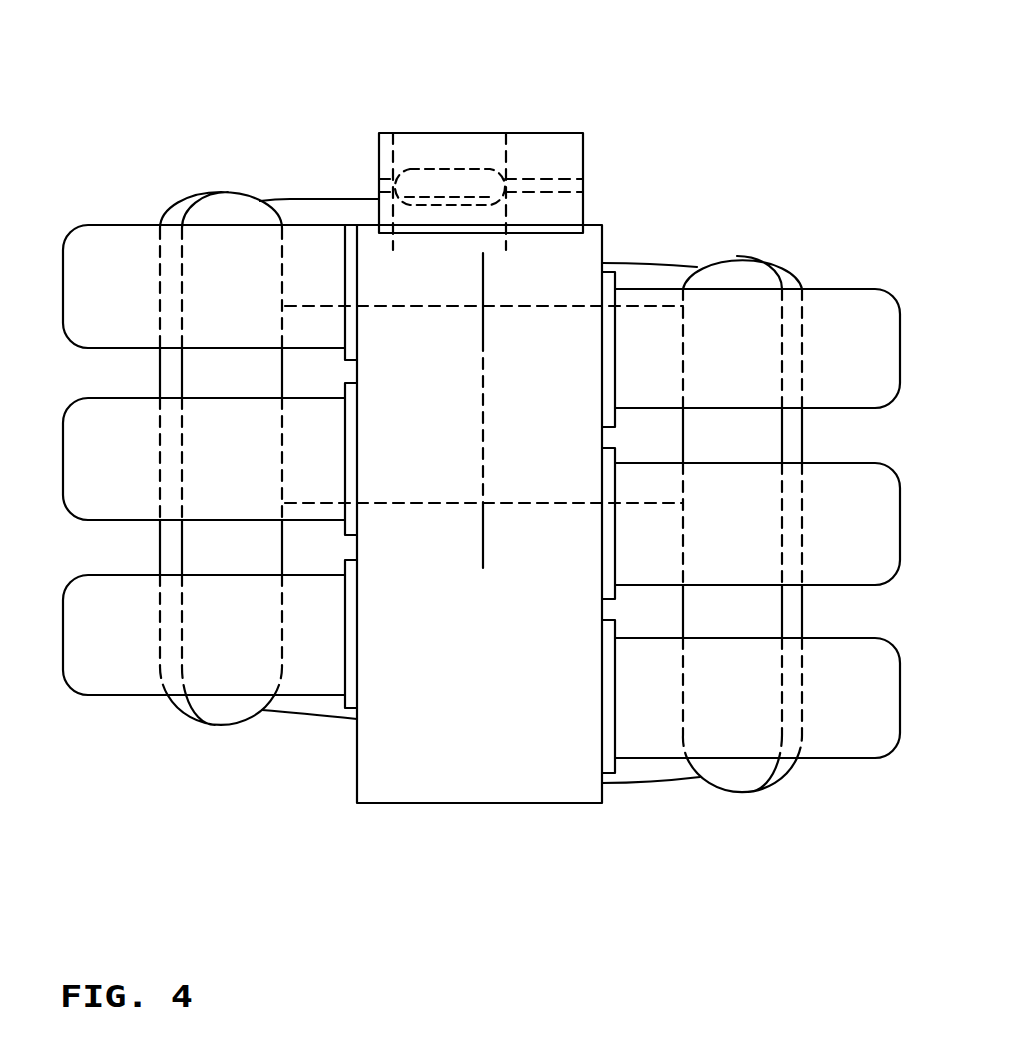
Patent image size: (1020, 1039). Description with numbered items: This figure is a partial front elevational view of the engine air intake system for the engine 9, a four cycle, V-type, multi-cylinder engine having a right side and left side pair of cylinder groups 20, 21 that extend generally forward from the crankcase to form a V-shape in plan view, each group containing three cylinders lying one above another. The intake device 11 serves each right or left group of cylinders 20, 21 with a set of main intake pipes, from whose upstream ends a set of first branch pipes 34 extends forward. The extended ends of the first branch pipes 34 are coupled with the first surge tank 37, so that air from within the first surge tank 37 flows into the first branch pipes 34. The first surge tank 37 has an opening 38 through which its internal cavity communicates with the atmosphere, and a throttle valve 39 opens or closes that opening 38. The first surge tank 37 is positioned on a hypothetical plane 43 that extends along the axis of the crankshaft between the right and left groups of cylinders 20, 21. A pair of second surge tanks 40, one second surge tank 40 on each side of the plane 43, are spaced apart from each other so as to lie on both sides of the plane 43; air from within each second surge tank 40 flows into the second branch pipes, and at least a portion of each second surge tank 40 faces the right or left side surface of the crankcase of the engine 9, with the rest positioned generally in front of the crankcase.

The engine 9 is at (708, 223).
The intake device 11 is at (263, 369).
The right side cylinder group 20 is at (652, 262).
The left side cylinder group 21 is at (305, 198).
The first branch pipe 34 is at (110, 252).
The first surge tank 37 is at (482, 783).
The opening 38 is at (398, 163).
The throttle valve 39 is at (462, 172).
The second surge tank 40 is at (227, 712).
The hypothetical plane 43 is at (483, 538).